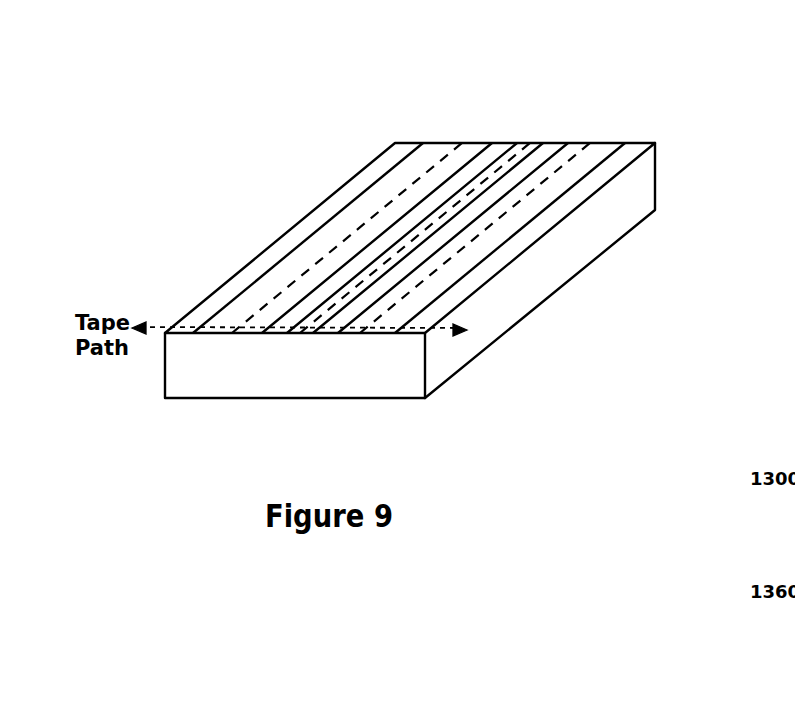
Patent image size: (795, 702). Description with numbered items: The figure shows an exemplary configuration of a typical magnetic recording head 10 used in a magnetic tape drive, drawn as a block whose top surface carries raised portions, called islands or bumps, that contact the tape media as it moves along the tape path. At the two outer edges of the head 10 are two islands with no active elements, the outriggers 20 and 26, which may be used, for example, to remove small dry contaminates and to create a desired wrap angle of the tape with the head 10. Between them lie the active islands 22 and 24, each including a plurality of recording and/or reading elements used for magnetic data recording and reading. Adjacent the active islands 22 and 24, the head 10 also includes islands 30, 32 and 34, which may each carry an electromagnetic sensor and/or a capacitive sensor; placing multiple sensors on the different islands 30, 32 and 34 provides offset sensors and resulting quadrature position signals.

The magnetic recording head 10 is at (278, 218).
The outrigger 20 is at (360, 193).
The active island 22 is at (440, 185).
The active island 24 is at (523, 150).
The outrigger 26 is at (588, 172).
The island 30 is at (284, 281).
The island 32 is at (378, 248).
The island 34 is at (476, 219).